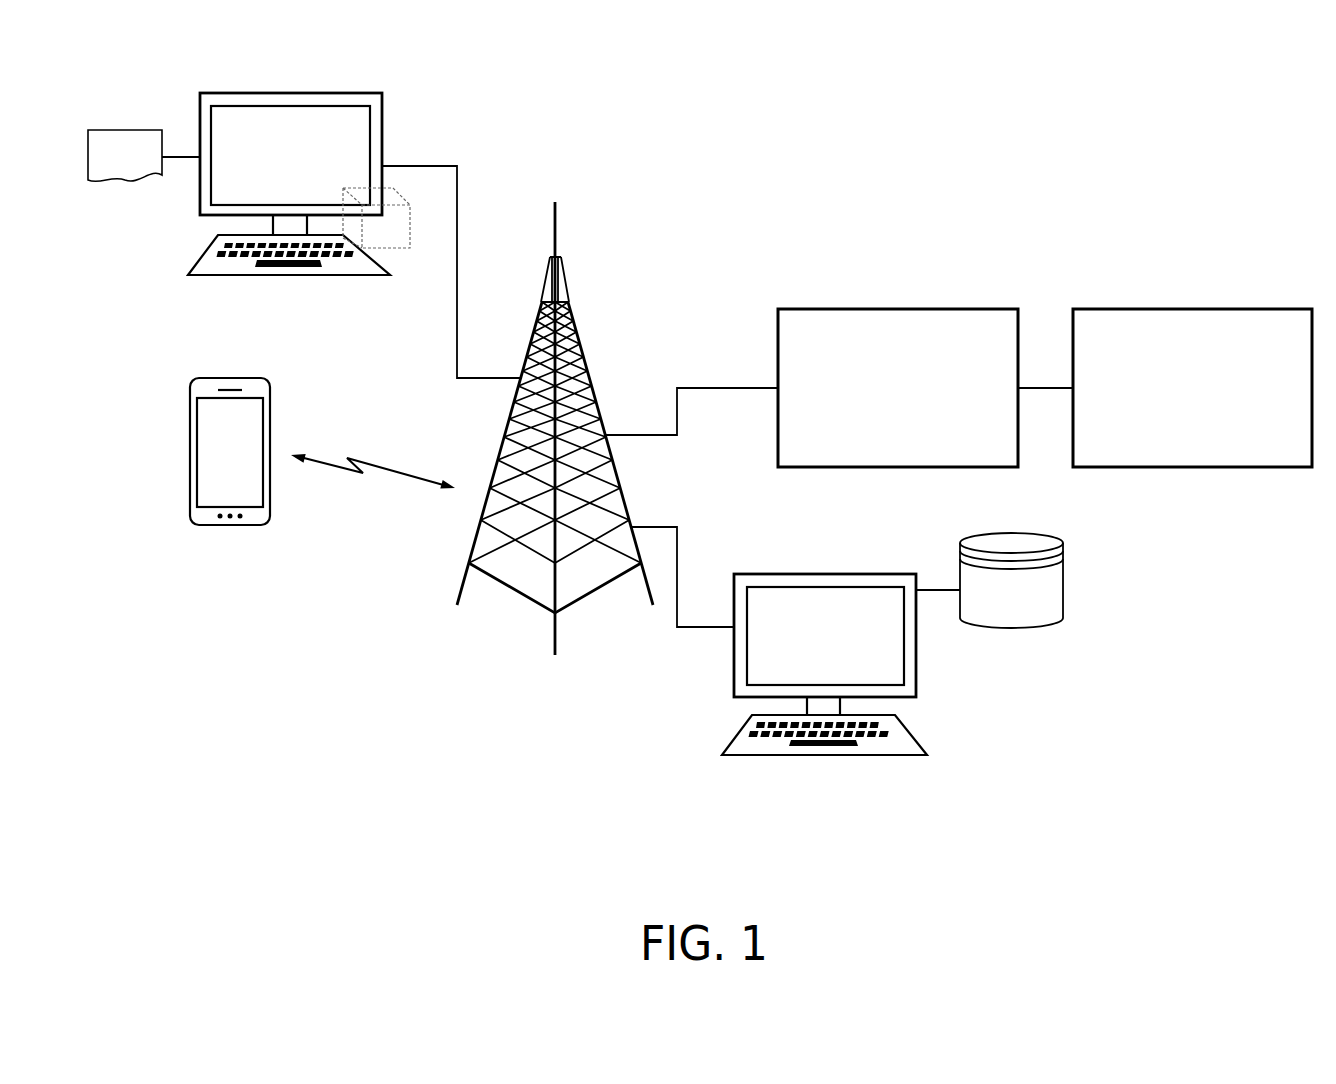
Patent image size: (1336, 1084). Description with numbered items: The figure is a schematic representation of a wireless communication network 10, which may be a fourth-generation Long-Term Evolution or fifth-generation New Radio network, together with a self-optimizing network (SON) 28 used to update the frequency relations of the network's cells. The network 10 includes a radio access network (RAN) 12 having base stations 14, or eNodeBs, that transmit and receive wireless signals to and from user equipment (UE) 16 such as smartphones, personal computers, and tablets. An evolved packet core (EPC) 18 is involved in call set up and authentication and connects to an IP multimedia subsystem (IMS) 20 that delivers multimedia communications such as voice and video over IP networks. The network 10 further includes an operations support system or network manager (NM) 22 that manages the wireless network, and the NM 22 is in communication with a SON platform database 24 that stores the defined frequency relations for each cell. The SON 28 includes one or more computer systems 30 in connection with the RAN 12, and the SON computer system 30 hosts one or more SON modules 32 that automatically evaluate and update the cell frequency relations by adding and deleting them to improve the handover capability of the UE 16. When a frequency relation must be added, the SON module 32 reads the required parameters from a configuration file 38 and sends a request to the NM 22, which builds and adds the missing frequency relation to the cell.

The wireless communication network 10 is at (759, 92).
The radio access network 12 is at (620, 270).
The base station 14 is at (591, 406).
The user equipment 16 is at (265, 398).
The evolved packet core 18 is at (945, 309).
The IP multimedia subsystem 20 is at (1258, 309).
The network manager 22 is at (863, 574).
The SON platform database 24 is at (1063, 572).
The self-optimizing network 28 is at (329, 93).
The SON computer system 30 is at (383, 112).
The SON module 32 is at (413, 218).
The configuration file 38 is at (100, 130).